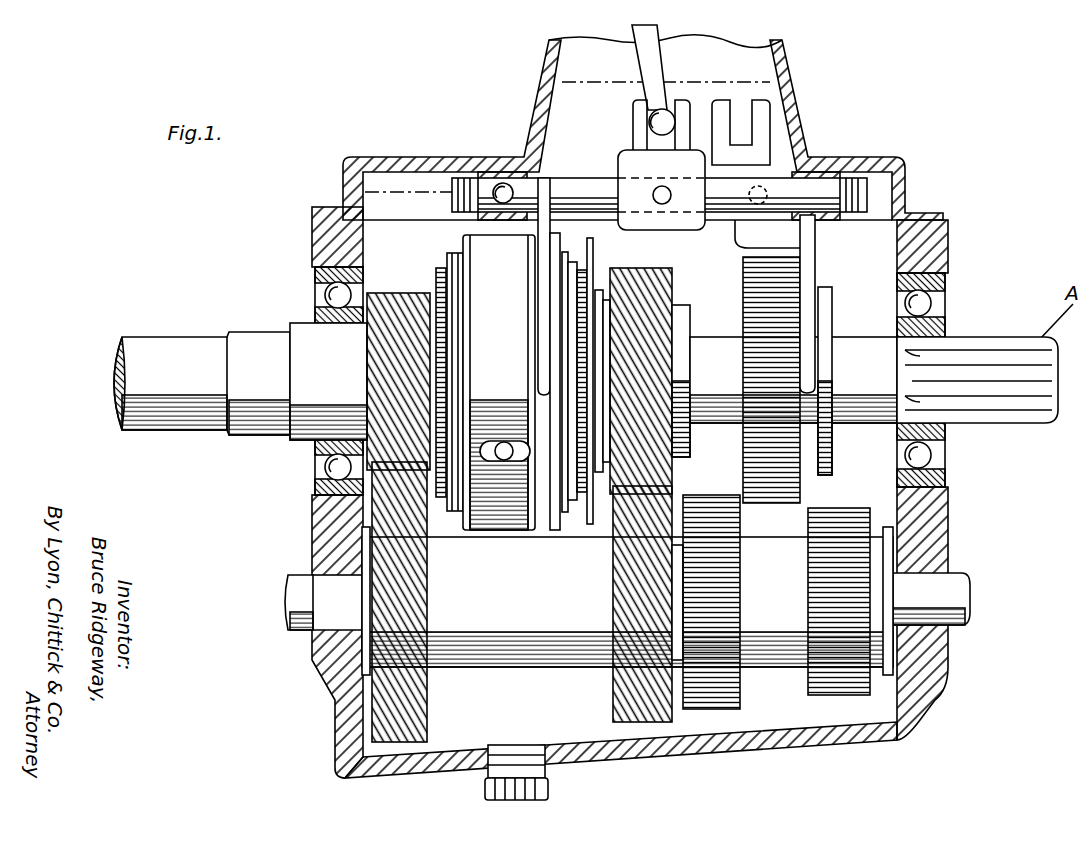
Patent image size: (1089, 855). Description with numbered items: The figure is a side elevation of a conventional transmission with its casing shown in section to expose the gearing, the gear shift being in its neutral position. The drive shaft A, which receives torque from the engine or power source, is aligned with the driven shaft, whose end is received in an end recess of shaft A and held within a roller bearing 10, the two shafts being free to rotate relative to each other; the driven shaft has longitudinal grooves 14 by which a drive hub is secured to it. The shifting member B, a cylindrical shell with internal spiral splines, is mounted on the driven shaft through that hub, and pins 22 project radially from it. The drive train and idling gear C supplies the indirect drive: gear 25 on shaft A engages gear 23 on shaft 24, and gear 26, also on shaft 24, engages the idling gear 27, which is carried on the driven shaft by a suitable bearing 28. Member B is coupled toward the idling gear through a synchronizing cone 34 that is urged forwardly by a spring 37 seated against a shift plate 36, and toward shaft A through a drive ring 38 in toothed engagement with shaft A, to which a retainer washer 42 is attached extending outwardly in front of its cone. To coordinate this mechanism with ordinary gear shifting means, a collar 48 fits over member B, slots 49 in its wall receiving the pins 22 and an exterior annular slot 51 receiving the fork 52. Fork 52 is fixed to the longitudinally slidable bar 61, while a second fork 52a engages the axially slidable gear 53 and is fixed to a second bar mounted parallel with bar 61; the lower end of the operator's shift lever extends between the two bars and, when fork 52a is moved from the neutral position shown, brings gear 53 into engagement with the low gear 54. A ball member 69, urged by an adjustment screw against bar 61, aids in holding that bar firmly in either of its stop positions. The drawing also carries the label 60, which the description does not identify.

The roller bearing 10 is at (334, 185).
The longitudinal grooves 14 is at (726, 413).
The pins 22 is at (500, 443).
The gear 23 is at (427, 585).
The shaft 24 is at (525, 647).
The gear 25 is at (372, 368).
The gear 26 is at (623, 567).
The idling gear 27 is at (672, 292).
The bearing 28 is at (680, 333).
The synchronizing cone 34 is at (573, 500).
The shift plate 36 is at (591, 243).
The spring 37 is at (581, 268).
The drive ring 38 is at (440, 283).
The retainer washer 42 is at (452, 283).
The collar 48 is at (470, 240).
The slots 49 is at (494, 462).
The exterior annular slot 51 is at (547, 513).
The fork 52 is at (622, 224).
The second fork 52a is at (806, 252).
The axially slidable gear 53 is at (783, 298).
The low gear 54 is at (727, 583).
The shift block 60 is at (605, 182).
The slidable bar 61 is at (558, 187).
The ball member 69 is at (505, 184).
The drive shaft A is at (183, 350).
The shifting member B is at (460, 512).
The drive train and idling gear C is at (612, 652).